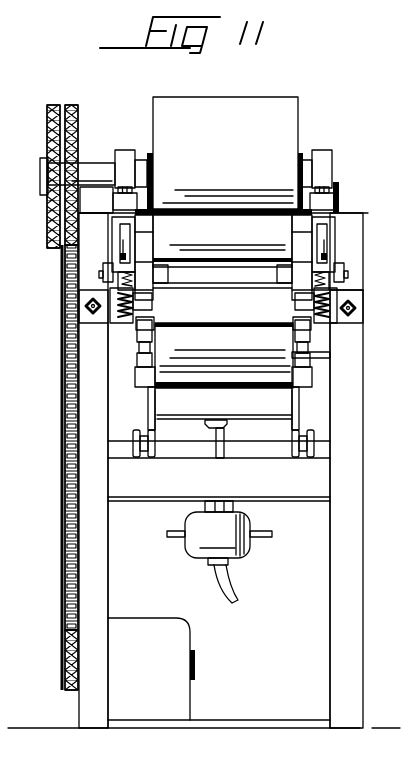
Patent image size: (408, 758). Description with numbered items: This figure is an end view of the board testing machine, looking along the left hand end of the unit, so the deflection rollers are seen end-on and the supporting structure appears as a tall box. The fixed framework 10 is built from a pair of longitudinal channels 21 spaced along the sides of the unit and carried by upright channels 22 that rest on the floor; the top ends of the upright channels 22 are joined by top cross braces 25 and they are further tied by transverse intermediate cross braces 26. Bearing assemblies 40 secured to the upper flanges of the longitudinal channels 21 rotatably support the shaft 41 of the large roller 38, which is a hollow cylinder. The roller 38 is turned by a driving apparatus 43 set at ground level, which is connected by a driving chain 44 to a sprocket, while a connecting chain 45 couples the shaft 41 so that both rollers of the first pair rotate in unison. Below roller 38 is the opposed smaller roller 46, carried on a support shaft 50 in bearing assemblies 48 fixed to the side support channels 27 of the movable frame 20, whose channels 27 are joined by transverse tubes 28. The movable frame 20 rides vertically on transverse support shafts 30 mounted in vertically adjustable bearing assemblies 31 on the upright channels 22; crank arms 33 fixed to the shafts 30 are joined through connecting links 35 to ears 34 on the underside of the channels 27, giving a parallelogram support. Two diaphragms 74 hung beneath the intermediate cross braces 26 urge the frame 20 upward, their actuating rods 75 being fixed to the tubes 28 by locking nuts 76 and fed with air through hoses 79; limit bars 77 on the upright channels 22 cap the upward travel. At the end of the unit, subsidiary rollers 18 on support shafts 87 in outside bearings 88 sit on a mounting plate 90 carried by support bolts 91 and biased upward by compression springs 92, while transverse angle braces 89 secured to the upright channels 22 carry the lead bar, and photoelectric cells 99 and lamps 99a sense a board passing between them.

The framework 10 is at (369, 309).
The subsidiary rollers 18 is at (222, 290).
The movable frame 20 is at (144, 414).
The longitudinal channels 21 is at (118, 228).
The upright channels 22 is at (108, 585).
The top cross braces 25 is at (340, 203).
The intermediate cross braces 26 is at (218, 486).
The side support channels 27 is at (146, 401).
The transverse tubes 28 is at (250, 406).
The transverse support shafts 30 is at (400, 457).
The bearing assemblies 31 is at (400, 437).
The crank arms 33 is at (151, 458).
The ears 34 is at (136, 438).
The connecting links 35 is at (137, 458).
The roller 38 is at (292, 128).
The bearing assemblies 40 is at (122, 152).
The shaft 41 is at (91, 170).
The driving apparatus 43 is at (187, 636).
The driving chain 44 is at (60, 602).
The connecting chain 45 is at (47, 128).
The roller 46 is at (196, 392).
The bearing assemblies 48 is at (138, 358).
The support shaft 50 is at (137, 341).
The diaphragms 74 is at (258, 536).
The actuating rods 75 is at (215, 450).
The locking nuts 76 is at (208, 425).
The limit bars 77 is at (320, 358).
The hoses 79 is at (218, 579).
The support shafts 87 is at (144, 308).
The outside bearings 88 is at (116, 315).
The transverse angle braces 89 is at (352, 291).
The mounting plate 90 is at (132, 281).
The support bolts 91 is at (121, 255).
The compression springs 92 is at (343, 325).
The photoelectric cells 99 is at (104, 272).
The lamps 99a is at (343, 270).